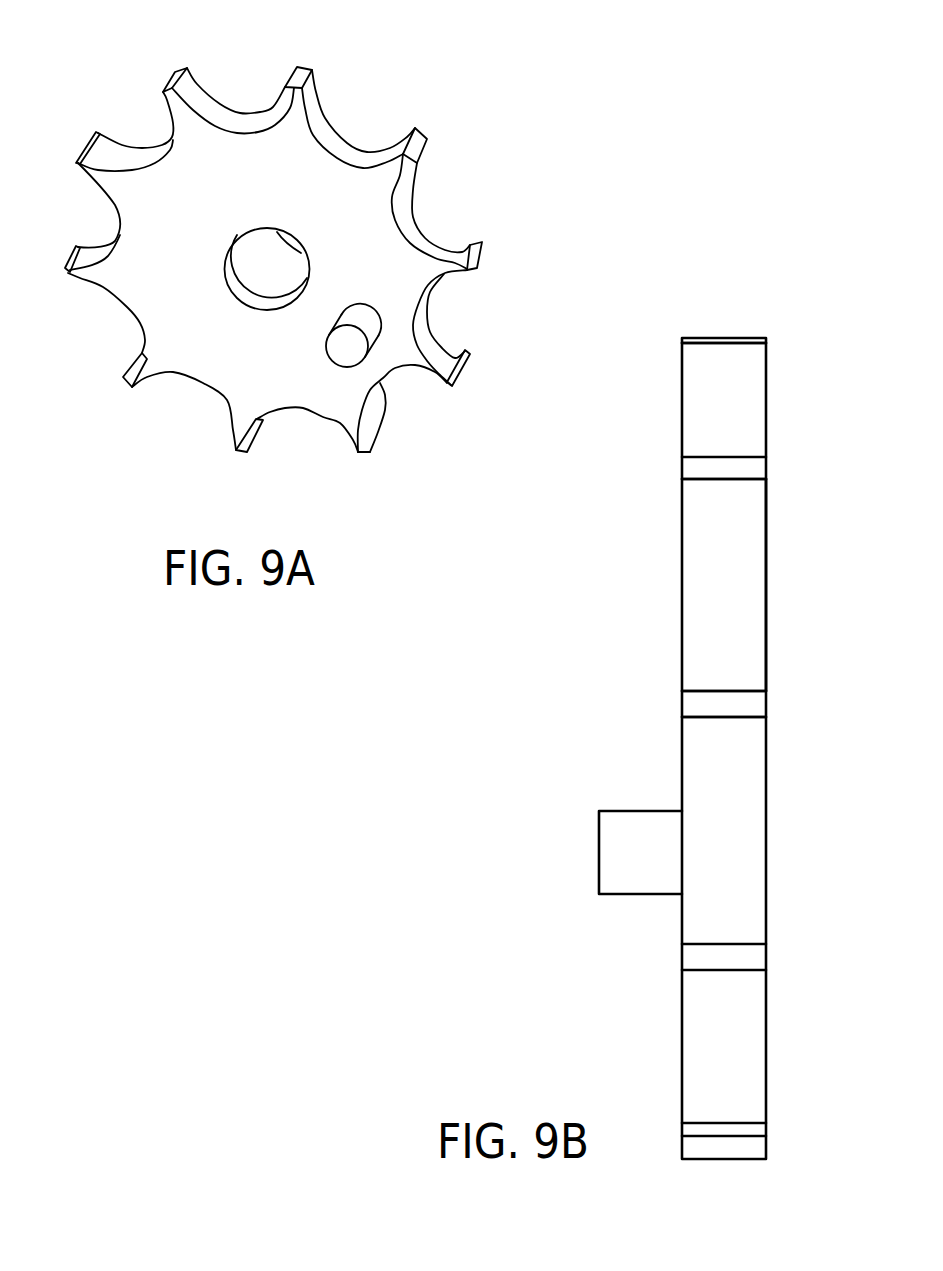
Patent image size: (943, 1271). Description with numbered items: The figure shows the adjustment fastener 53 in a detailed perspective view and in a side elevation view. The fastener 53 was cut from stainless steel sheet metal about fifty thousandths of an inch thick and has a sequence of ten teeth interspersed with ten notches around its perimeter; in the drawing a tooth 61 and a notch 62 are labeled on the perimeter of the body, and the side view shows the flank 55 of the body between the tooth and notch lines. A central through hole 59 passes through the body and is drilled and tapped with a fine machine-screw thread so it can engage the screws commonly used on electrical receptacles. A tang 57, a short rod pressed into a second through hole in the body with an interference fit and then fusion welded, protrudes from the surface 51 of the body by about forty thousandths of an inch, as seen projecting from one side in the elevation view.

In FIG. 9A, the surface 51 is at (297, 388).
In FIG. 9B, the surface 51 is at (682, 402).
In FIG. 9A, the adjustment fastener 53 is at (449, 137).
In FIG. 9B, the adjustment fastener 53 is at (775, 424).
In FIG. 9B, the side face 55 is at (768, 520).
In FIG. 9A, the tang 57 is at (360, 353).
In FIG. 9B, the tang 57 is at (599, 854).
In FIG. 9A, the central through hole 59 is at (300, 252).
In FIG. 9A, the tooth 61 is at (302, 65).
In FIG. 9B, the tooth 61 is at (768, 701).
In FIG. 9A, the recess 62 is at (240, 111).
In FIG. 9B, the recess 62 is at (740, 586).